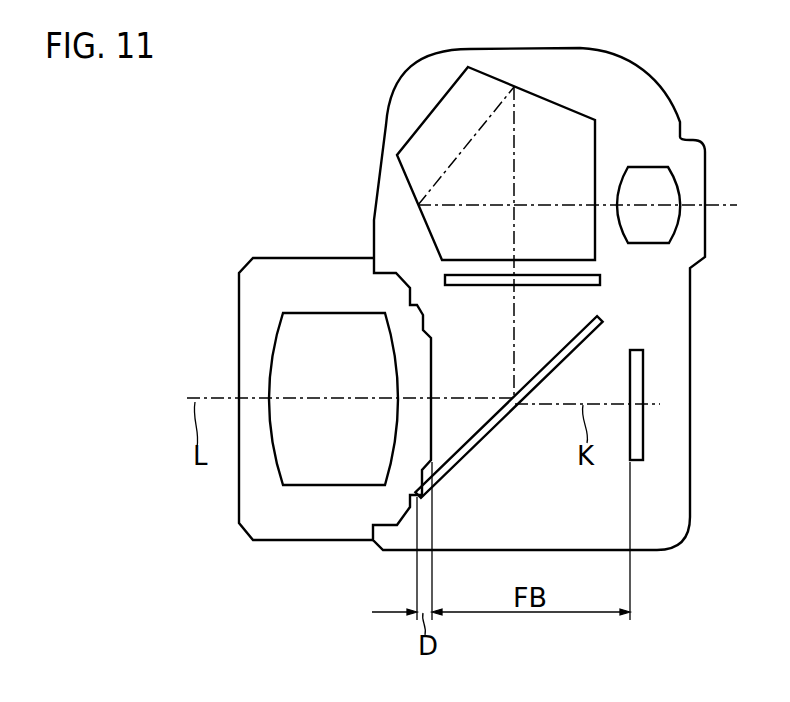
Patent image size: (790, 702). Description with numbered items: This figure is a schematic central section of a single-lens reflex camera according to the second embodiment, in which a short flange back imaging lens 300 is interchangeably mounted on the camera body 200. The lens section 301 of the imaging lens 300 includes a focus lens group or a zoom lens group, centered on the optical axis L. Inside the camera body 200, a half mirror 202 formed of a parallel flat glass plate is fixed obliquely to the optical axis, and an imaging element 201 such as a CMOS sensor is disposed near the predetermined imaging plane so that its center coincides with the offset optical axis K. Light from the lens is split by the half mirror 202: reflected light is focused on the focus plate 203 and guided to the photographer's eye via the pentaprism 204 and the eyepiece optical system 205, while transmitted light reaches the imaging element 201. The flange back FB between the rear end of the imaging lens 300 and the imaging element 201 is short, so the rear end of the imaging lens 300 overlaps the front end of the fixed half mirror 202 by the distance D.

The camera body 200 is at (657, 105).
The imaging element 201 is at (637, 462).
The half mirror 202 is at (472, 448).
The focus plate 203 is at (458, 287).
The pentaprism 204 is at (427, 140).
The eyepiece optical system 205 is at (647, 237).
The imaging lens 300 is at (290, 267).
The lens section 301 is at (308, 475).